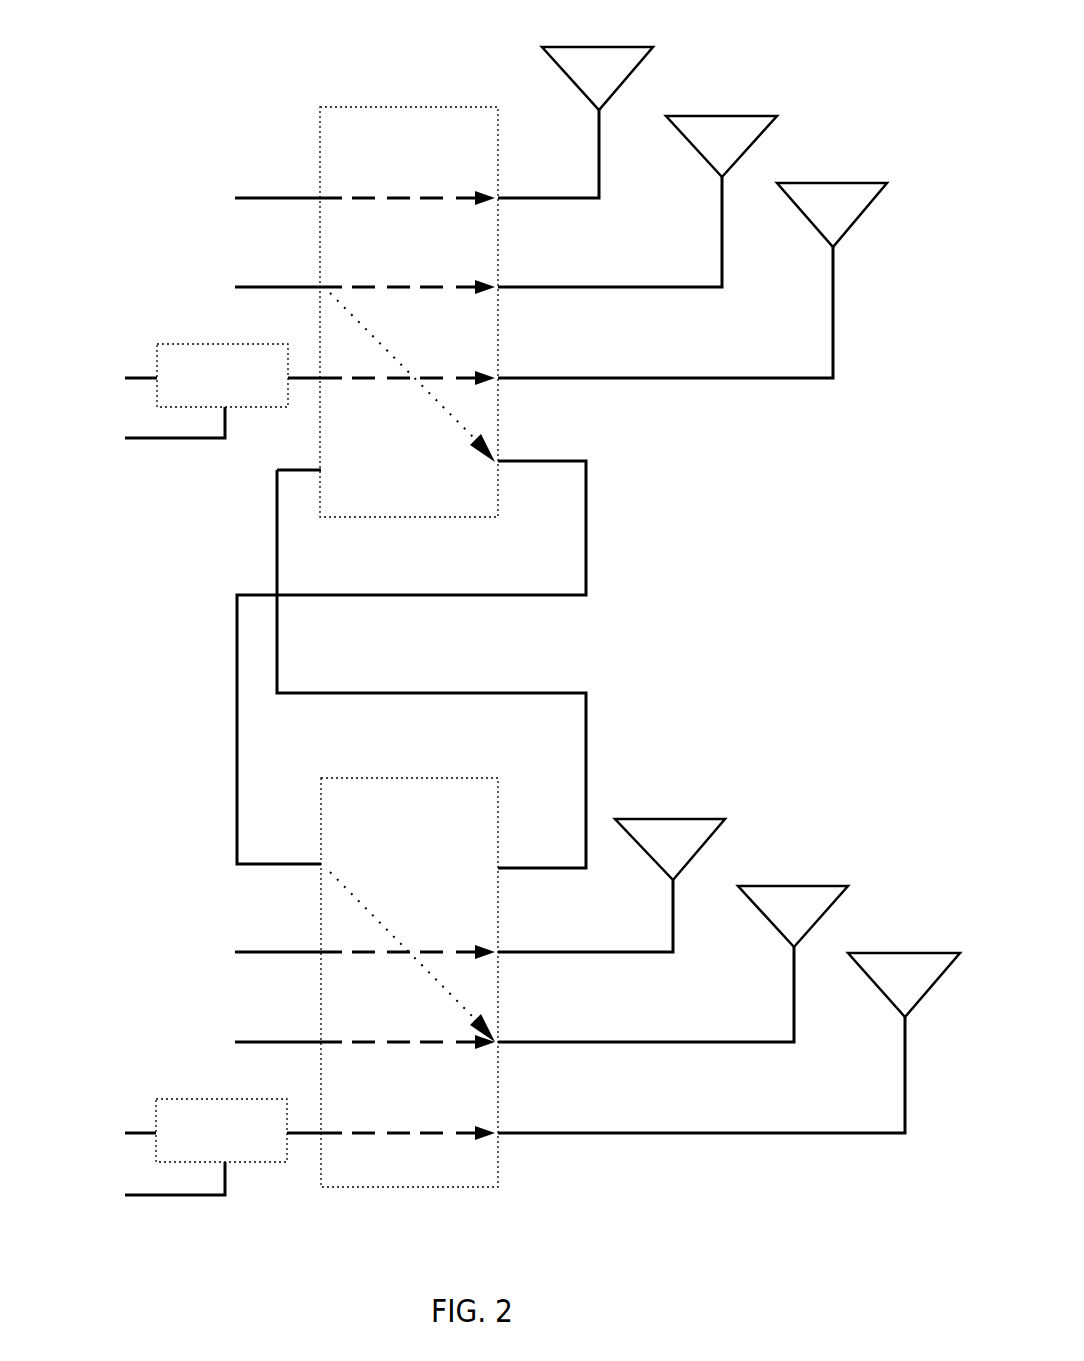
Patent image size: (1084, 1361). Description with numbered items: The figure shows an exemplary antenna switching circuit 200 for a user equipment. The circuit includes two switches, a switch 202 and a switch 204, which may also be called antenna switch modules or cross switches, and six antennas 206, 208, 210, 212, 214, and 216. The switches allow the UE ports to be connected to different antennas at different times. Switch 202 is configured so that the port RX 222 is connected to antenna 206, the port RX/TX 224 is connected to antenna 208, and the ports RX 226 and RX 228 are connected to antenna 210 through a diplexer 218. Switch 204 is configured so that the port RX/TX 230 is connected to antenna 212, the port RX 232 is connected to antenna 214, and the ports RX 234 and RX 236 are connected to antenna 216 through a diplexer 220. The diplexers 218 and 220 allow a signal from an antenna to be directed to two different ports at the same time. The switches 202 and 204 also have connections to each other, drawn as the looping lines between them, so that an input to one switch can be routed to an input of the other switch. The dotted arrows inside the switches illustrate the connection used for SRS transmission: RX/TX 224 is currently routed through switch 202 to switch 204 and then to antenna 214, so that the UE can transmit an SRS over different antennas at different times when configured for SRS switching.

The antenna switching system 200 is at (232, 55).
The switch 202 is at (409, 312).
The switch 204 is at (409, 982).
The antenna 206 is at (645, 46).
The antenna 208 is at (756, 114).
The antenna 210 is at (858, 181).
The antenna 212 is at (700, 818).
The antenna 214 is at (818, 886).
The antenna 216 is at (907, 950).
The diplexer 218 is at (222, 375).
The diplexer 220 is at (221, 1130).
The RX port 222 is at (322, 199).
The RX/TX port 224 is at (301, 288).
The RX port 226 is at (268, 379).
The RX port 228 is at (133, 430).
The RX/TX port 230 is at (300, 953).
The RX port 232 is at (322, 1043).
The RX port 234 is at (269, 1134).
The RX port 236 is at (134, 1186).